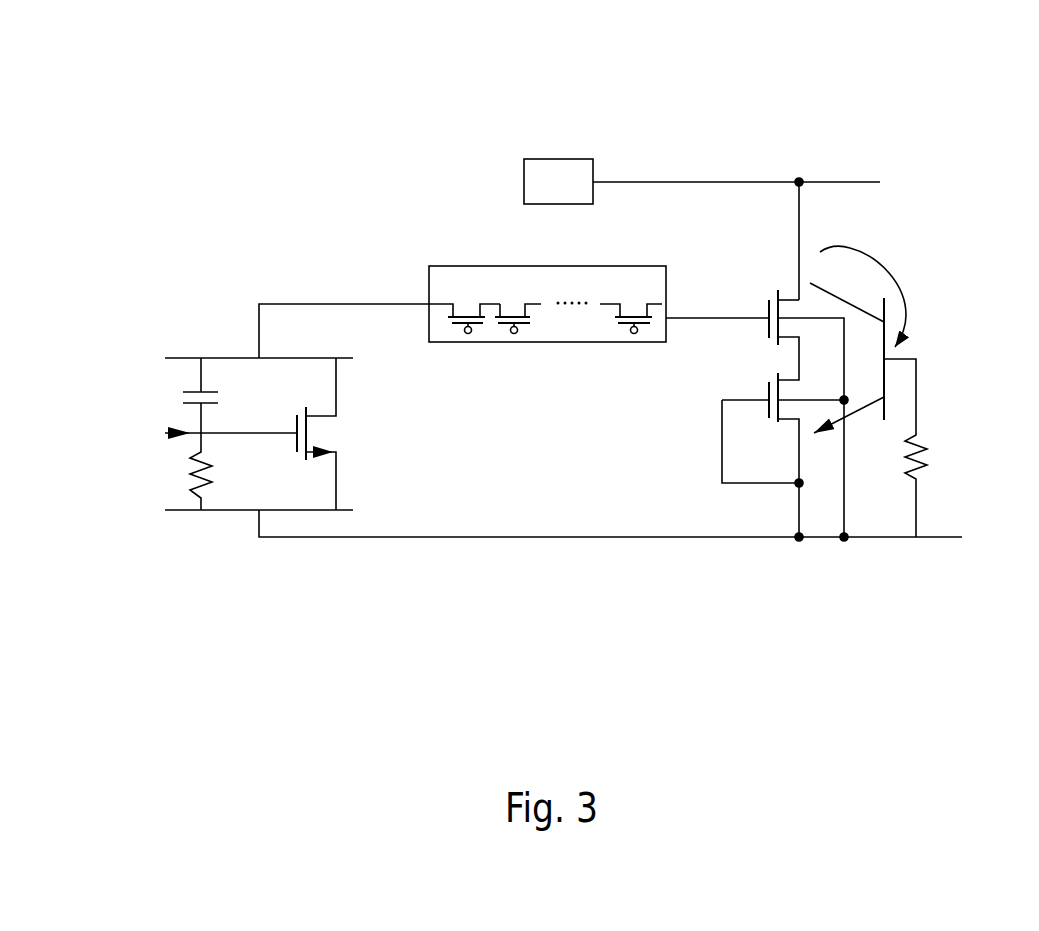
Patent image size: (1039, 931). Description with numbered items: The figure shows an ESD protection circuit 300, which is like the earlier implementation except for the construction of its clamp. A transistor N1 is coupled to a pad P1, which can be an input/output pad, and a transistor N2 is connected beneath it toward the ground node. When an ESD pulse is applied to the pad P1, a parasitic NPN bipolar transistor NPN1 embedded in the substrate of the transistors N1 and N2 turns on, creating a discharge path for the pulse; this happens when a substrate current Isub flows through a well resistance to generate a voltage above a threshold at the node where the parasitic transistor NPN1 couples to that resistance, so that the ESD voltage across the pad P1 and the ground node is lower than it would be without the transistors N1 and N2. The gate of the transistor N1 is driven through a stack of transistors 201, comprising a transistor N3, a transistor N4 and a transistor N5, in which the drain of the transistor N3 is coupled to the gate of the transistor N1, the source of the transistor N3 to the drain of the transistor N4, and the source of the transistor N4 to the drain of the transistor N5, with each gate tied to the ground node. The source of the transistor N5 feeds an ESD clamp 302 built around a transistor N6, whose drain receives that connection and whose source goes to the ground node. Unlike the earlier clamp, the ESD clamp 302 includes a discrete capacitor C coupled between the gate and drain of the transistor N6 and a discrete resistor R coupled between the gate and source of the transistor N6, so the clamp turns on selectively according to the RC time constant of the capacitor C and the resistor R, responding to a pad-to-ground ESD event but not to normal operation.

The ESD protection circuit 300 is at (950, 65).
The ESD clamp 302 is at (202, 353).
The stack of transistors 201 is at (575, 266).
The pad P1 is at (702, 181).
The transistor N1 is at (803, 359).
The transistor N2 is at (785, 457).
The transistor N3 is at (631, 303).
The transistor N4 is at (517, 303).
The transistor N5 is at (464, 303).
The transistor N6 is at (336, 400).
The capacitor C is at (212, 395).
The resistor R is at (216, 471).
The parasitic NPN bipolar transistor NPN1 is at (903, 410).
The substrate current Isub is at (890, 296).